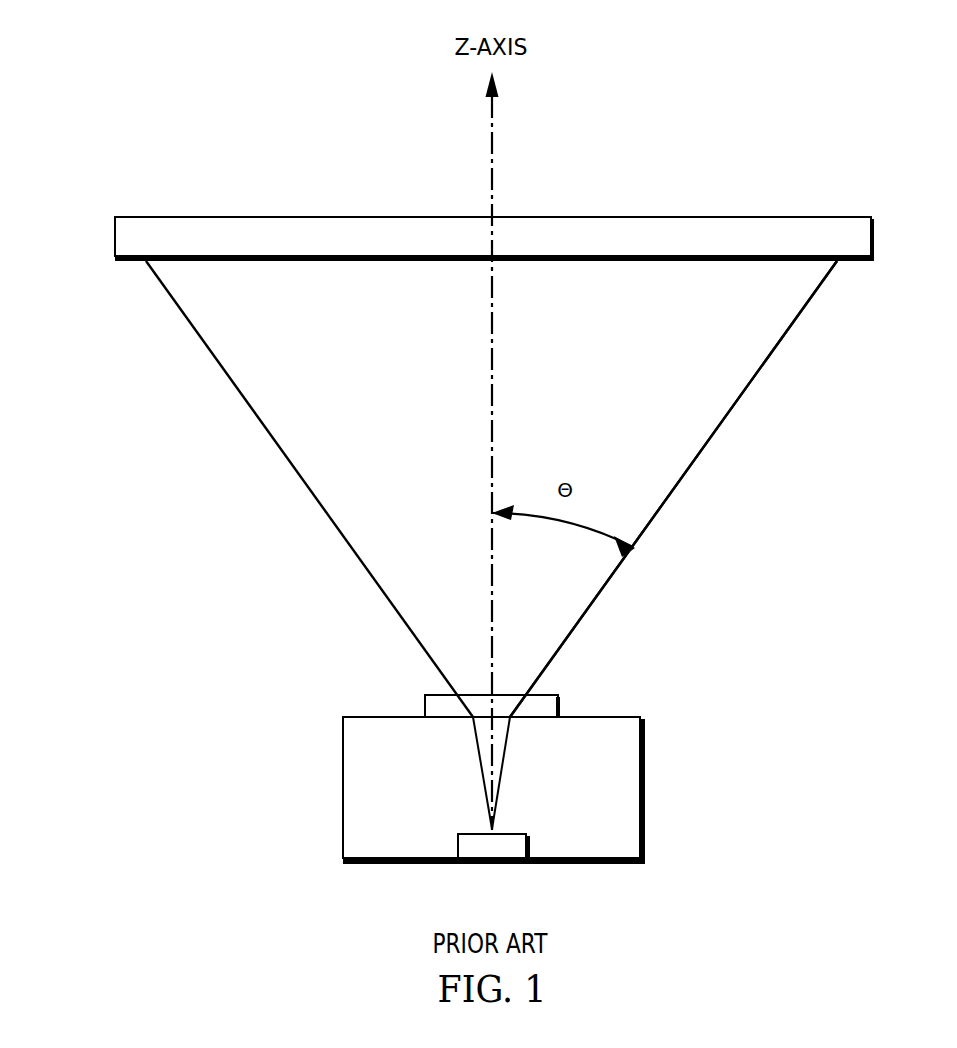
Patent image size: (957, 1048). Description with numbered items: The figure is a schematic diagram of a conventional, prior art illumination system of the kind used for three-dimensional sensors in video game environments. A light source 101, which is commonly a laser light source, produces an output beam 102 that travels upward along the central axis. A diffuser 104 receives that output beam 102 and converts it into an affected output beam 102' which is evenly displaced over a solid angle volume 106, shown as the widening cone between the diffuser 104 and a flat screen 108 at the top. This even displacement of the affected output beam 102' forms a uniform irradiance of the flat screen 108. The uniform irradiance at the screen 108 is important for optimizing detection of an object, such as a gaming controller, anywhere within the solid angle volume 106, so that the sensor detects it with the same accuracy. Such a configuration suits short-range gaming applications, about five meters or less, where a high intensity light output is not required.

The light source 101 is at (343, 788).
The output beam 102 is at (473, 787).
The affected output beam 102' is at (673, 489).
The diffuser 104 is at (424, 704).
The solid angle volume 106 is at (400, 377).
The flat screen 108 is at (115, 235).